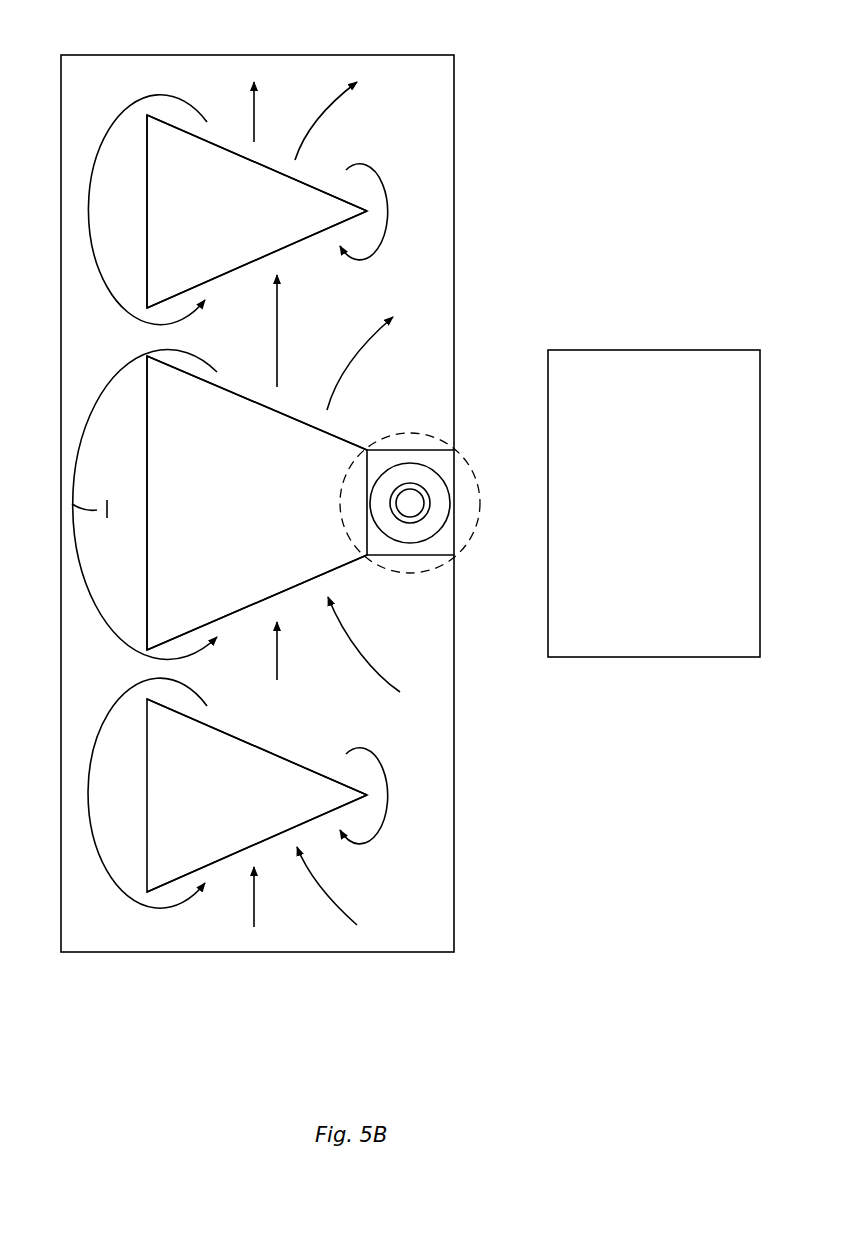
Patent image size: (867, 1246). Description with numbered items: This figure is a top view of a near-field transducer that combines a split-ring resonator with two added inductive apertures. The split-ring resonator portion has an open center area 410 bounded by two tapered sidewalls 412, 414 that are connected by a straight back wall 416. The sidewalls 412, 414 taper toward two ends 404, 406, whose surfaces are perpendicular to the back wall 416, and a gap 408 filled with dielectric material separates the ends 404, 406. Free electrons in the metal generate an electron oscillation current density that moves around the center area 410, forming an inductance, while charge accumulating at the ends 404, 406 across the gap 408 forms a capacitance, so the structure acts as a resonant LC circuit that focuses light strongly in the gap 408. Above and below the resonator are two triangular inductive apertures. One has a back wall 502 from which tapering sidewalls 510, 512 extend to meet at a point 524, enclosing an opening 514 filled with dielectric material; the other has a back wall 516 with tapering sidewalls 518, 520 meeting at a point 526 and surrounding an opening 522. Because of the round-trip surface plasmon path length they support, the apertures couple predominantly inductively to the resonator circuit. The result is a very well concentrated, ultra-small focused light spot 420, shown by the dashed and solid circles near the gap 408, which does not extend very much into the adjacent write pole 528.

The back wall 502 is at (348, 65).
The opening 522 is at (291, 224).
The tapering sidewall 518 is at (242, 158).
The tapering sidewall 520 is at (242, 267).
The back wall 516 is at (147, 211).
The point 526 is at (367, 211).
The open center area 410 is at (291, 516).
The tapered sidewall 414 is at (252, 402).
The tapered sidewall 412 is at (248, 607).
The back wall 416 is at (147, 503).
The end 406 is at (372, 455).
The end 404 is at (372, 548).
The gap 408 is at (463, 469).
The hot spot 420 is at (412, 505).
The opening 514 is at (291, 807).
The tapering sidewall 510 is at (242, 742).
The tapering sidewall 512 is at (242, 852).
The point 524 is at (367, 795).
The write pole 528 is at (672, 518).